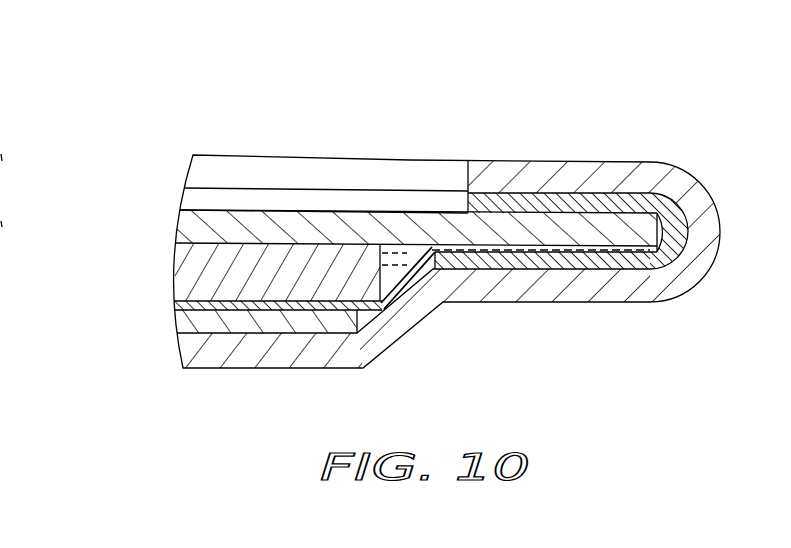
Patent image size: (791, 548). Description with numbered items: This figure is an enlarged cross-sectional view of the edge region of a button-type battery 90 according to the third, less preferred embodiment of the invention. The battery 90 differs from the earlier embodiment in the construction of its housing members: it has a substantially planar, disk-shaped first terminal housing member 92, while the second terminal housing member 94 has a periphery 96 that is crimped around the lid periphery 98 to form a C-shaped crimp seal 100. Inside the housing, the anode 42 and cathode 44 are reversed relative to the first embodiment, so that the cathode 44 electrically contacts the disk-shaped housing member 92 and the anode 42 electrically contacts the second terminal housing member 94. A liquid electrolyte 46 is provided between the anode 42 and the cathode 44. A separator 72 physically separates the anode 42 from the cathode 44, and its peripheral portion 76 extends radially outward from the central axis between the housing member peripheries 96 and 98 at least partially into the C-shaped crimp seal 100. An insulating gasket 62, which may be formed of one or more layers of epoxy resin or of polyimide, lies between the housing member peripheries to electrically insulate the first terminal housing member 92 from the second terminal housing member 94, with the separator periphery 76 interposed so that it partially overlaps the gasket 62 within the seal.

The button-type battery 90 is at (345, 136).
The first terminal housing member 92 is at (237, 217).
The liquid electrolyte 46 is at (393, 243).
The lid periphery 98 is at (572, 230).
The C-shaped crimp seal 100 is at (713, 165).
The cathode 44 is at (188, 278).
The separator 72 is at (182, 305).
The separator peripheral portion 76 is at (515, 272).
The insulating gasket 62 is at (562, 258).
The second terminal housing member periphery 96 is at (603, 290).
The second terminal housing member 94 is at (221, 356).
The anode 42 is at (302, 327).